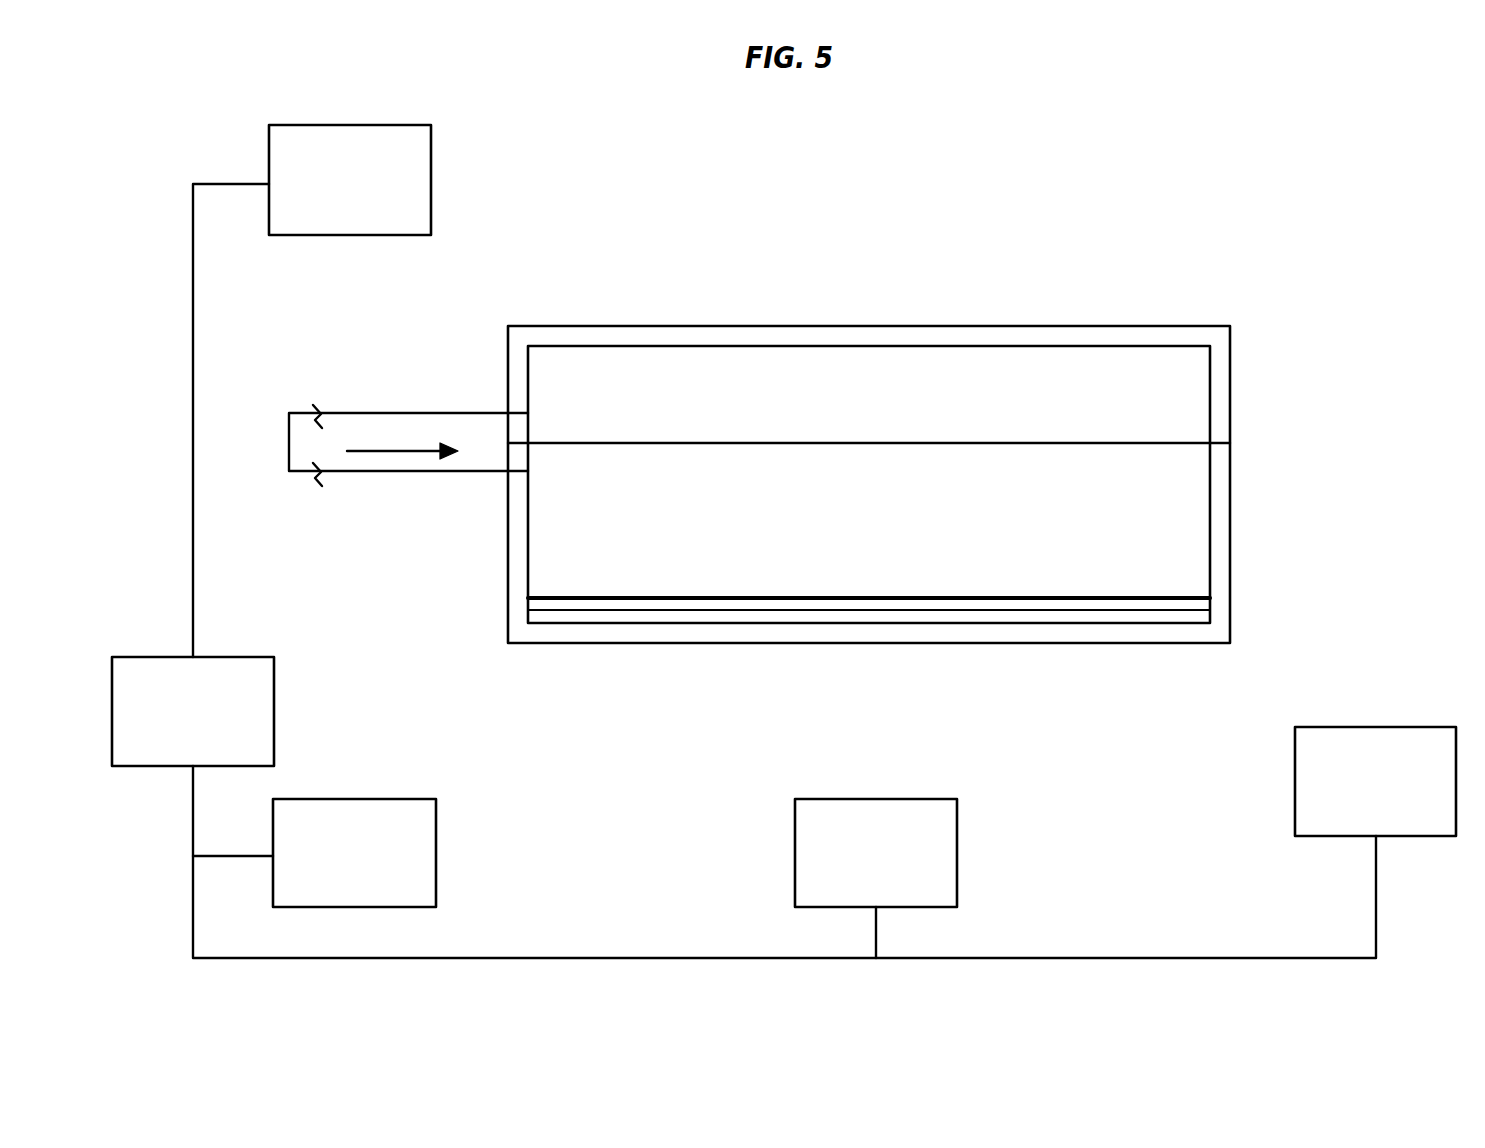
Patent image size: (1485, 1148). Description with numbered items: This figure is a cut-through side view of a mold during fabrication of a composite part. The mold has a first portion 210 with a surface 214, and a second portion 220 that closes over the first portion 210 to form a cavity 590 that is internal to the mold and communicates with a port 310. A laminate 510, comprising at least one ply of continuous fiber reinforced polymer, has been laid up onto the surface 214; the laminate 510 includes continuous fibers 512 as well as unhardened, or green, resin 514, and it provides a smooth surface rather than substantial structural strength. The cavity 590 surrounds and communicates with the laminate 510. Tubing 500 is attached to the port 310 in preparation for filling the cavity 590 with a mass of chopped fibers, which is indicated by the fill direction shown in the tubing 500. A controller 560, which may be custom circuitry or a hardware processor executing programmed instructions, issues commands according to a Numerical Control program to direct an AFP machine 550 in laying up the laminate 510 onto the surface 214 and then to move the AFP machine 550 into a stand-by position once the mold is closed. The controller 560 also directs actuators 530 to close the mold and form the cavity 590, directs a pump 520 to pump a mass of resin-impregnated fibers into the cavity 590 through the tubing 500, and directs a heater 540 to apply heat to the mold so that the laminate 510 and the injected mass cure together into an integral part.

The first portion of mold 210 is at (508, 604).
The surface 214 is at (1172, 626).
The second portion of mold 220 is at (508, 358).
The port 310 is at (520, 437).
The tubing 500 is at (397, 473).
The laminate 510 is at (693, 596).
The continuous fibers 512 is at (1110, 612).
The unhardened resin 514 is at (888, 603).
The pump 520 is at (335, 883).
The actuators 530 is at (857, 884).
The heater 540 is at (1356, 813).
The AFP machine 550 is at (331, 208).
The controller 560 is at (174, 742).
The cavity 590 is at (1180, 400).